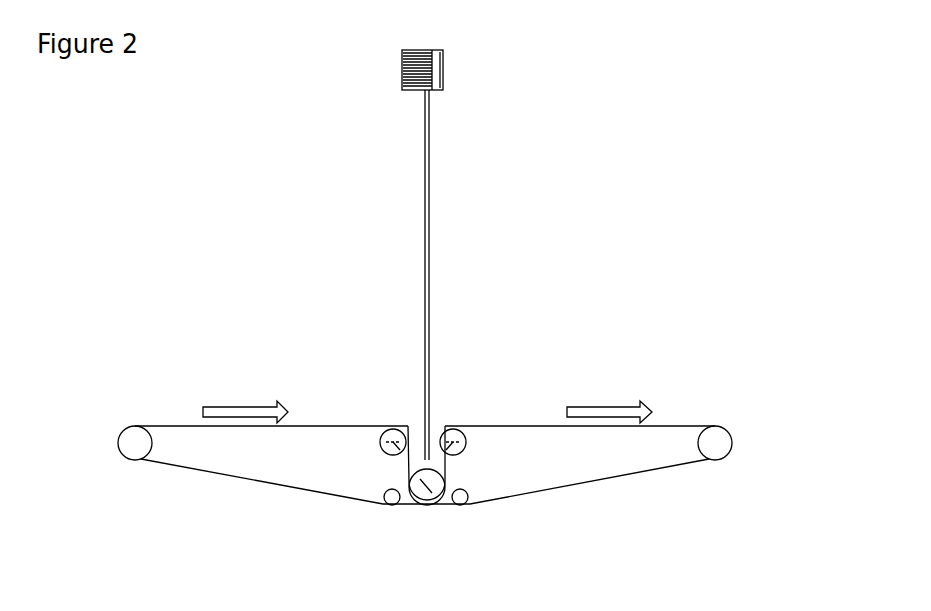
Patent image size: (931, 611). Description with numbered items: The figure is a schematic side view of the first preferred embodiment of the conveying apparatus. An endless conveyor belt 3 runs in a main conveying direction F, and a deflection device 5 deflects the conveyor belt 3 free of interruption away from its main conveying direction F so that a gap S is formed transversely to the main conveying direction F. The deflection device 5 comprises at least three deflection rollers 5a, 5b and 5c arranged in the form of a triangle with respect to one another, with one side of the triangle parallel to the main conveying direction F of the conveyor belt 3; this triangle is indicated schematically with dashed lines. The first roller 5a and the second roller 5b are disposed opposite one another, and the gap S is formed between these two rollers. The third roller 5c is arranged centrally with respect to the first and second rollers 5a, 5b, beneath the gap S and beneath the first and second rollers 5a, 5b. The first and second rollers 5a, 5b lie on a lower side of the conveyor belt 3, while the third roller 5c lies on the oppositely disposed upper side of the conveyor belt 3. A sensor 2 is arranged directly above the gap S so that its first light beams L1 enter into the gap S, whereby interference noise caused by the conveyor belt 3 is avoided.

The sensor 2 is at (402, 91).
The first light beams L1 is at (429, 208).
The gap S is at (418, 426).
The deflection device 5 is at (425, 405).
The first roller 5a is at (393, 442).
The second roller 5b is at (453, 442).
The third roller 5c is at (466, 509).
The conveyor belt 3 is at (677, 426).
The main conveying direction F is at (240, 405).